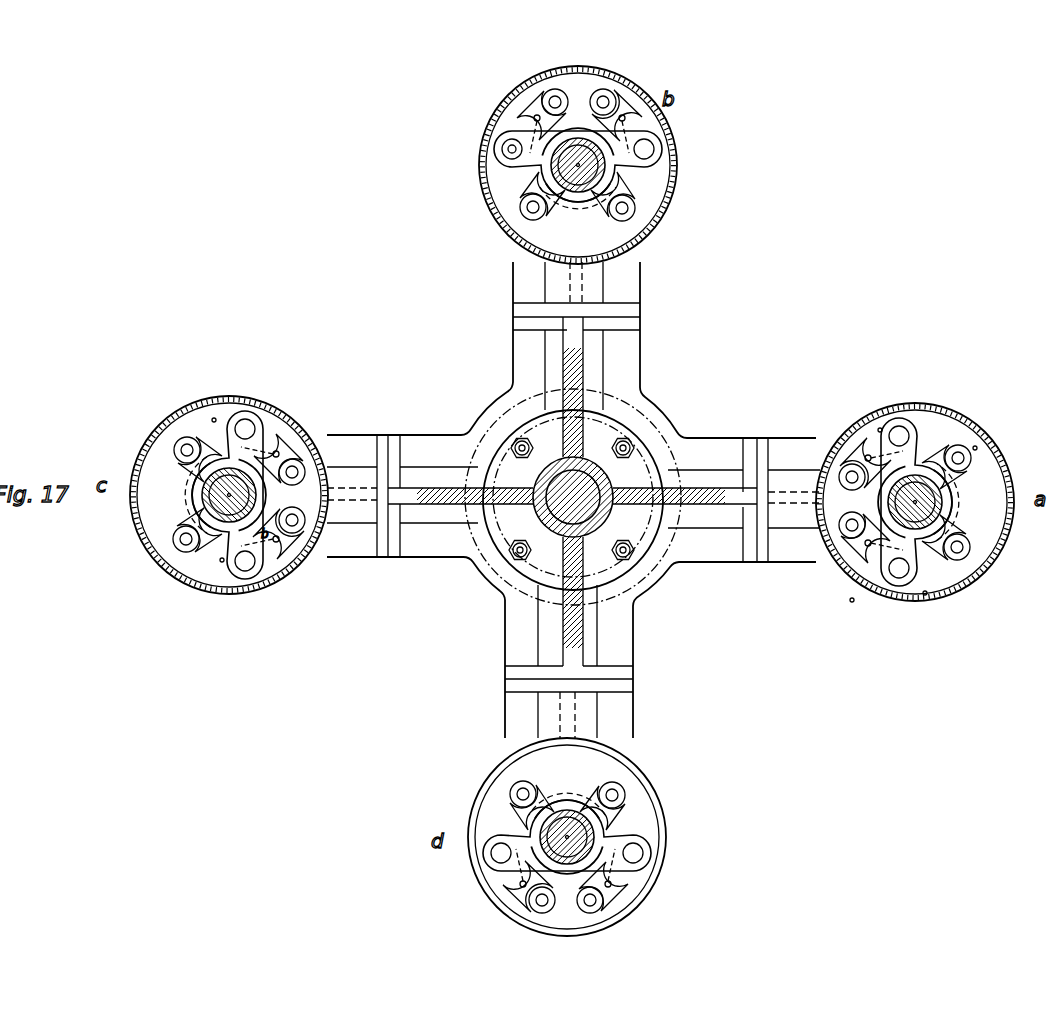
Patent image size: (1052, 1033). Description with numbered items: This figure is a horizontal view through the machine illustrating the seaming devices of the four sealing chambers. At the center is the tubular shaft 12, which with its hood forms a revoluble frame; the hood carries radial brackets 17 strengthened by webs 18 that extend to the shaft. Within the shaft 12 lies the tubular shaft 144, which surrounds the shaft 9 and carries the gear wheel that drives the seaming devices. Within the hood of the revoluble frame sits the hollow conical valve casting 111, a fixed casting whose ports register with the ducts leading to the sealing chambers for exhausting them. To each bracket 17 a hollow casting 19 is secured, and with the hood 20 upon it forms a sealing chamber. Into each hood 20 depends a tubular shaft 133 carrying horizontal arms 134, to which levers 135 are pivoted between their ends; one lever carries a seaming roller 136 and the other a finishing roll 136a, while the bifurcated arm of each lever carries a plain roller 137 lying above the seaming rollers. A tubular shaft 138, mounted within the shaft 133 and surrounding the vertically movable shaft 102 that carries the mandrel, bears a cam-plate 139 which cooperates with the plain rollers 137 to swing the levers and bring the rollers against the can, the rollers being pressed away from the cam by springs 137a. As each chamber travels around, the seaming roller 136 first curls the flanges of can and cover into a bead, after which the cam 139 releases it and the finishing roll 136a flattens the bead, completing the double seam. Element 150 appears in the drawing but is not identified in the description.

The shaft 9 is at (605, 483).
The tubular shaft 12 is at (545, 512).
The radial brackets 17 is at (603, 332).
The webs 18 is at (563, 357).
The hollow casting 19 is at (572, 308).
The hood 20 is at (636, 252).
The vertically movable shaft 102 is at (552, 168).
The hollow conical valve casting 111 is at (650, 450).
The tubular shaft 133 is at (577, 194).
The horizontal arms 134 is at (920, 440).
The levers 135 is at (213, 418).
The seaming roller 136 is at (606, 98).
The finishing roll 136a is at (480, 905).
The plain roller 137 is at (520, 218).
The springs 137a is at (880, 428).
The tubular shaft 138 is at (512, 148).
The cam-plate 139 is at (618, 182).
The tubular shaft 144 is at (548, 480).
The shaft core 150 is at (580, 182).